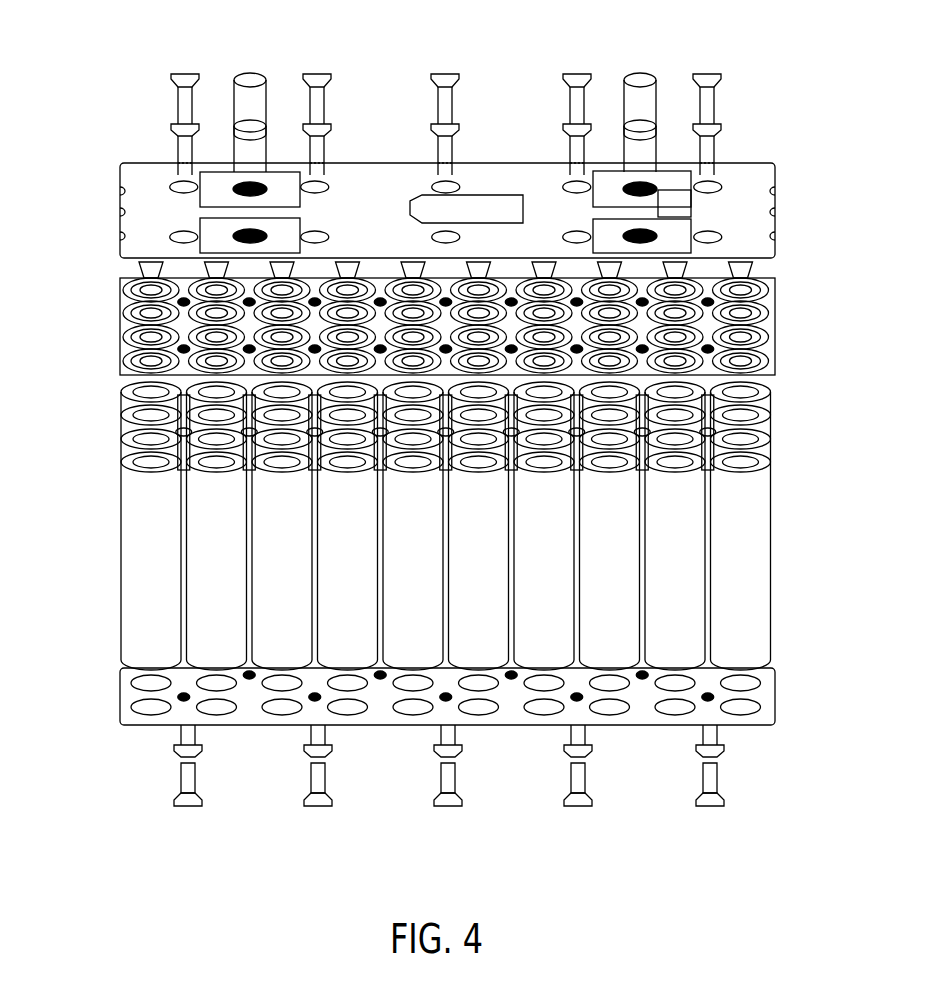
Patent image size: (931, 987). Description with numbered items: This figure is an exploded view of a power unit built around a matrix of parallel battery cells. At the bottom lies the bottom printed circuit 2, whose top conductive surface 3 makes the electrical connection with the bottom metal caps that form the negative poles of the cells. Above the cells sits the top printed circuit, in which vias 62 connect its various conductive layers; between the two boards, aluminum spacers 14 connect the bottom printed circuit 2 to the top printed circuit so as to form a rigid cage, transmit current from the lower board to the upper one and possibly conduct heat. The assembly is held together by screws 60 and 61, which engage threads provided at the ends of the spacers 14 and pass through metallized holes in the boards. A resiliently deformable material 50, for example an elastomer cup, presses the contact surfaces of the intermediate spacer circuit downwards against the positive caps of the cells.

The bottom printed circuit 2 is at (434, 416).
The top conductive surface 3 is at (741, 178).
The aluminum spacer 14 is at (123, 426).
The resiliently deformable material 50 is at (122, 310).
The screw 60 is at (181, 103).
The screw 61 is at (313, 784).
The vias 62 is at (249, 100).